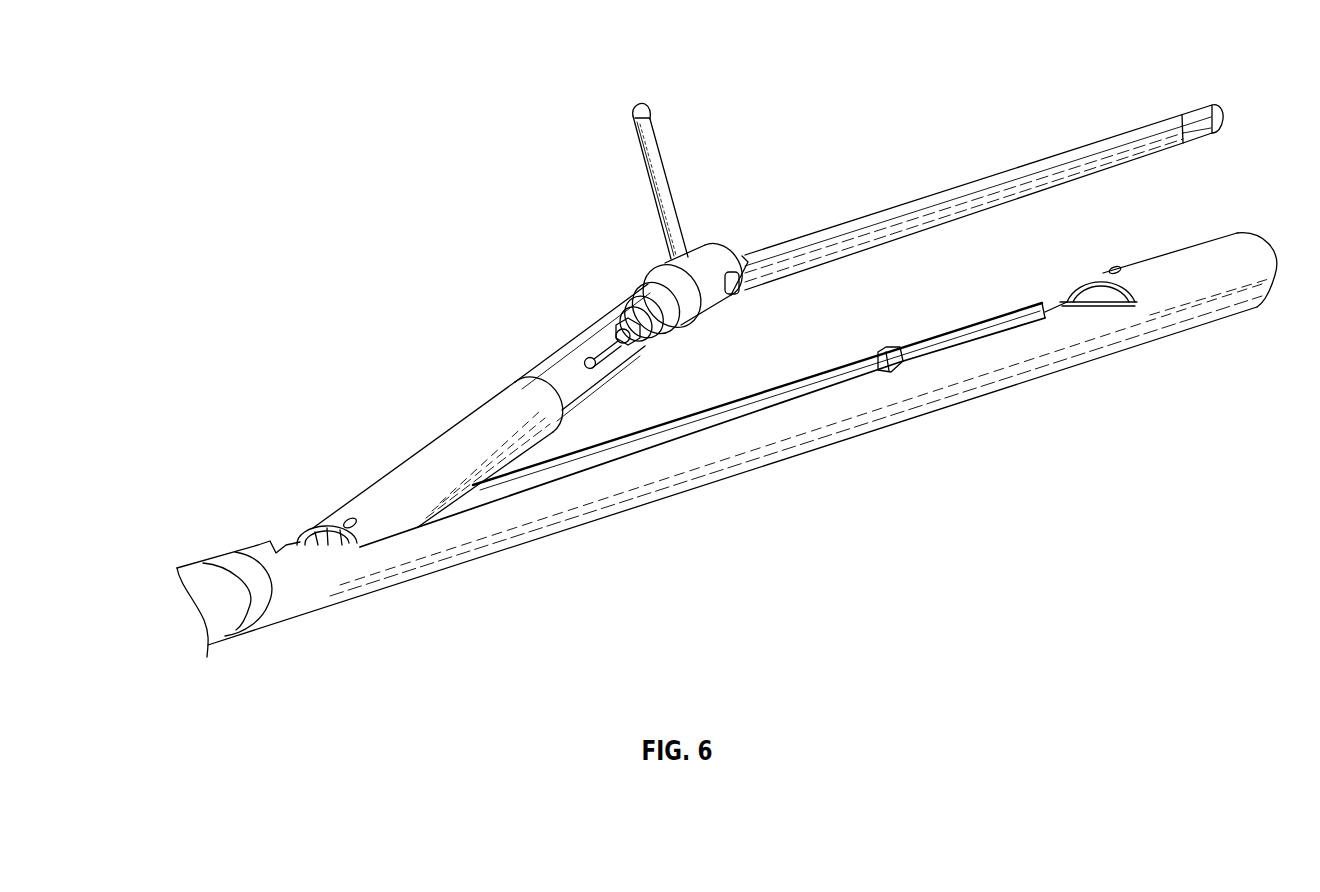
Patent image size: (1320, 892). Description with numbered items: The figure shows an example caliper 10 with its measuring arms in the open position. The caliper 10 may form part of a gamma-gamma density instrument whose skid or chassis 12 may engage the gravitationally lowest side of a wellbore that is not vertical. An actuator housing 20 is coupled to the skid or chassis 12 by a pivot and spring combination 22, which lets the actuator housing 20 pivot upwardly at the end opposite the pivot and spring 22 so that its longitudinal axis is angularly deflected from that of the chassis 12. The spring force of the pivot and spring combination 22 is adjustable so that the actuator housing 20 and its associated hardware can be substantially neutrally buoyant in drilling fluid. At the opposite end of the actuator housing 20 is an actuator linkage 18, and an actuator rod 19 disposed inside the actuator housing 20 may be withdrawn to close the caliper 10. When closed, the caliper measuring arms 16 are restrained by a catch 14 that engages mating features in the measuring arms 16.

The caliper 10 is at (301, 100).
The skid or chassis 12 is at (822, 447).
The catch 14 is at (888, 350).
The caliper measuring arms 16 is at (644, 170).
The actuator linkage 18 is at (650, 292).
The actuator rod 19 is at (584, 360).
The actuator housing 20 is at (437, 444).
The pivot and spring combination 22 is at (311, 530).